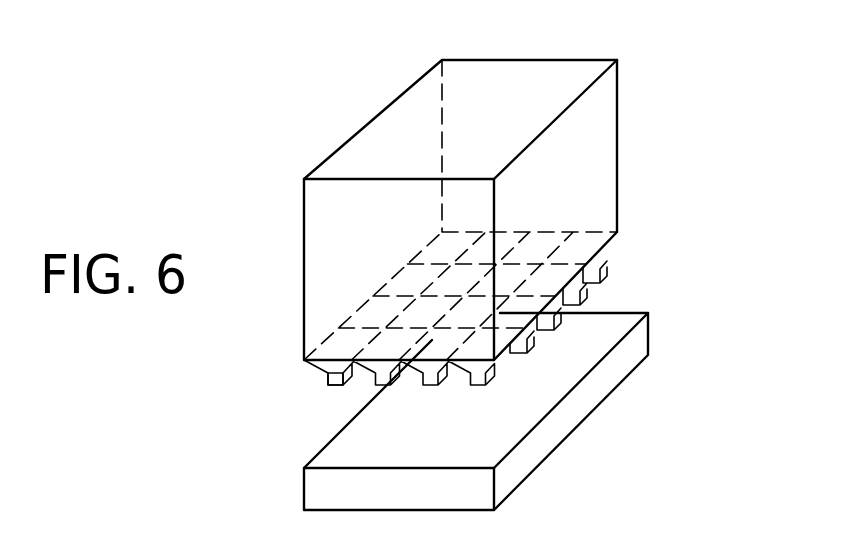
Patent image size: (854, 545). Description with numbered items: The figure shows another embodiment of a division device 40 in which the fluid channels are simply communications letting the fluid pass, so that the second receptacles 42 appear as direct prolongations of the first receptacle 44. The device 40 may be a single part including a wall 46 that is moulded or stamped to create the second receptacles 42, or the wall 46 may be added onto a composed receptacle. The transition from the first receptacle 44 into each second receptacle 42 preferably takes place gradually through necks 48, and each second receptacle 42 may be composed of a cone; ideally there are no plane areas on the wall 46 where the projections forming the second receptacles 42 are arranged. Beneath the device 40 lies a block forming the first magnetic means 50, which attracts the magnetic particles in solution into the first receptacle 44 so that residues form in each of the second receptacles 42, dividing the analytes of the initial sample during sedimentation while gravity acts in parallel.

The device 40 is at (469, 239).
The second receptacles 42 is at (456, 330).
The first receptacle 44 is at (610, 117).
The wall 46 is at (590, 284).
The necks 48 is at (327, 382).
The first magnetic means 50 is at (603, 326).